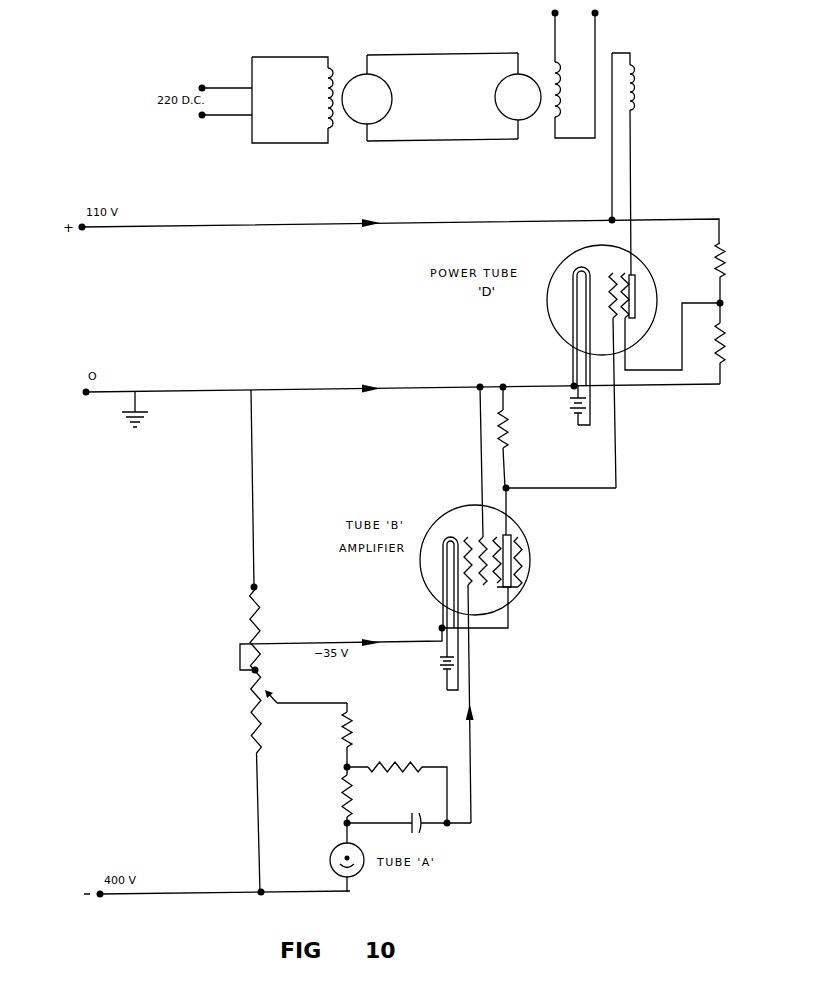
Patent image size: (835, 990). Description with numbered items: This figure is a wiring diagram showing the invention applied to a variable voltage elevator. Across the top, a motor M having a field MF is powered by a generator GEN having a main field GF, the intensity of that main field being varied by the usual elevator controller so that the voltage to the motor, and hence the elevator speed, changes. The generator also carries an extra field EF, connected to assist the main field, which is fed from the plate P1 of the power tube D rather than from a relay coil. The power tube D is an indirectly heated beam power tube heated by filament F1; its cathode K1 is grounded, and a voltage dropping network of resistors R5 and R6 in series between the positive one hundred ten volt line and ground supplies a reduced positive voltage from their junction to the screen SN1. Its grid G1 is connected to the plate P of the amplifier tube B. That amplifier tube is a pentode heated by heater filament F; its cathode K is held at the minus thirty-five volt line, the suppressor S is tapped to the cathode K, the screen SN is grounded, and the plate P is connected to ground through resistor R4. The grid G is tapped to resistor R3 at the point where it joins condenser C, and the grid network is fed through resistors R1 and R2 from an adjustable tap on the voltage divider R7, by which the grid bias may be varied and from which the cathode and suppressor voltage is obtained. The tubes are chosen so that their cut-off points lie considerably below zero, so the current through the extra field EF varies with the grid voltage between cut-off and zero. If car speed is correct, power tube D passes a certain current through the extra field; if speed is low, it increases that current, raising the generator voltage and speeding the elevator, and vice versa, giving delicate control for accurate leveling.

The motor field MF is at (292, 100).
The motor M is at (367, 98).
The generator GEN is at (518, 96).
The main field GF is at (567, 74).
The extra field EF is at (632, 164).
The resistor R5 is at (727, 260).
The resistor R6 is at (727, 343).
The cathode K1 is at (570, 346).
The filament F1 is at (586, 397).
The grid G1 is at (621, 380).
The screen SN1 is at (670, 321).
The plate P1 is at (638, 270).
The resistor R4 is at (512, 437).
The plate P is at (560, 536).
The screen SN is at (470, 486).
The suppressor S is at (482, 582).
The grid G is at (475, 680).
The cathode K is at (443, 613).
The heater filament F is at (453, 659).
The voltage divider R7 is at (298, 641).
The resistor R1 is at (355, 739).
The resistor R2 is at (339, 809).
The resistor R3 is at (397, 783).
The condenser C is at (409, 815).